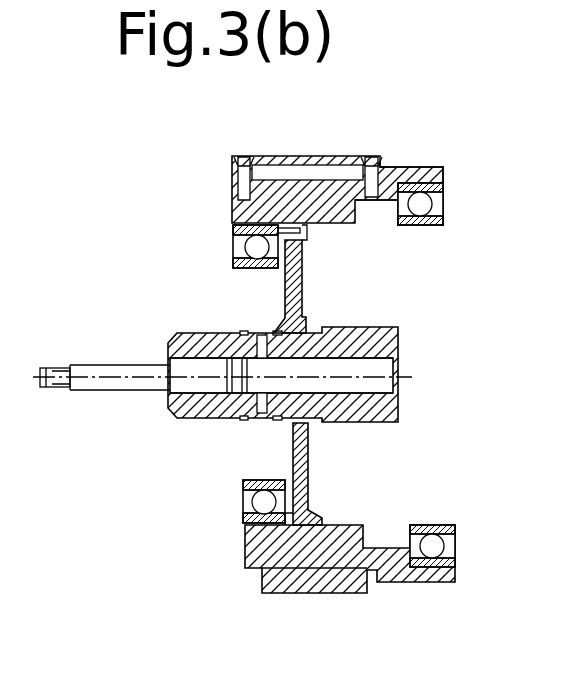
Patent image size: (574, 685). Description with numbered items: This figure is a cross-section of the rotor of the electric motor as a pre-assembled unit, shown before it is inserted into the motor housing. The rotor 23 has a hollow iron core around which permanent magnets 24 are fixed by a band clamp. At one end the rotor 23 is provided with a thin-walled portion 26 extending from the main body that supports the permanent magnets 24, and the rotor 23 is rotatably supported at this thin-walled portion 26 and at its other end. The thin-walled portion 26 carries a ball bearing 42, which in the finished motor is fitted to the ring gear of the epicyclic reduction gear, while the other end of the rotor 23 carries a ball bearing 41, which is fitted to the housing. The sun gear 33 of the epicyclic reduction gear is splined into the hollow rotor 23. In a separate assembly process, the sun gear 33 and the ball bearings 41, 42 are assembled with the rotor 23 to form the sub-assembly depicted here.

The rotor 23 is at (320, 182).
The permanent magnets 24 is at (245, 562).
The thin-walled portion 26 is at (417, 167).
The sun gear 33 is at (215, 343).
The ball bearing 41 is at (237, 245).
The ball bearing 42 is at (430, 203).